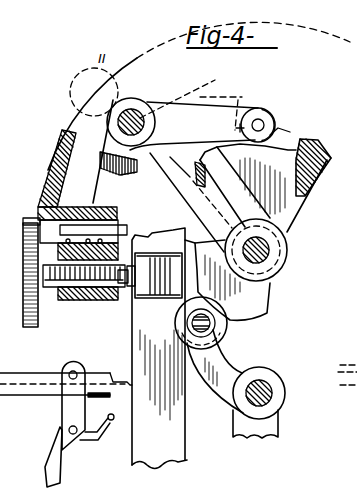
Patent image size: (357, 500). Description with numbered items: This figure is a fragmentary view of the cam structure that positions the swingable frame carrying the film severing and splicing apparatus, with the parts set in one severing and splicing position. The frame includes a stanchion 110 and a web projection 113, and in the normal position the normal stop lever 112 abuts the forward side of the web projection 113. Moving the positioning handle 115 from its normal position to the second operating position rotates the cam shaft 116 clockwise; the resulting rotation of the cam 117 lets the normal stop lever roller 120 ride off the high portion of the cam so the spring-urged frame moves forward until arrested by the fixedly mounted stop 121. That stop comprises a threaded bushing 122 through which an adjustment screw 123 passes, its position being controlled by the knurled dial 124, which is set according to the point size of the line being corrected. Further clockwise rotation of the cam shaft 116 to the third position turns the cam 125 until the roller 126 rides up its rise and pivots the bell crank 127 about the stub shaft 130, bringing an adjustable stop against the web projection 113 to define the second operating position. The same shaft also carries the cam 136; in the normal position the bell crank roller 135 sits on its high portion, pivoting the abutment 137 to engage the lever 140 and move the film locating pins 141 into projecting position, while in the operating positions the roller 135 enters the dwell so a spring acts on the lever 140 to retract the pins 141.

The stanchion 110 is at (142, 465).
The normal stop lever 112 is at (101, 162).
The web projection 113 is at (168, 300).
The positioning handle 115 is at (70, 107).
The cam shaft 116 is at (262, 252).
The cam 117 is at (320, 151).
The normal stop lever roller 120 is at (277, 133).
The fixedly mounted stop 121 is at (64, 300).
The threaded bushing 122 is at (98, 301).
The adjustment screw 123 is at (48, 300).
The knurled dial 124 is at (32, 328).
The cam 125 is at (290, 214).
The roller 126 is at (261, 108).
The bell crank 127 is at (177, 102).
The stub shaft 130 is at (136, 114).
The bell crank roller 135 is at (229, 331).
The cam 136 is at (266, 302).
The abutment 137 is at (61, 466).
The lever 140 is at (85, 410).
The film locating pins 141 is at (103, 436).